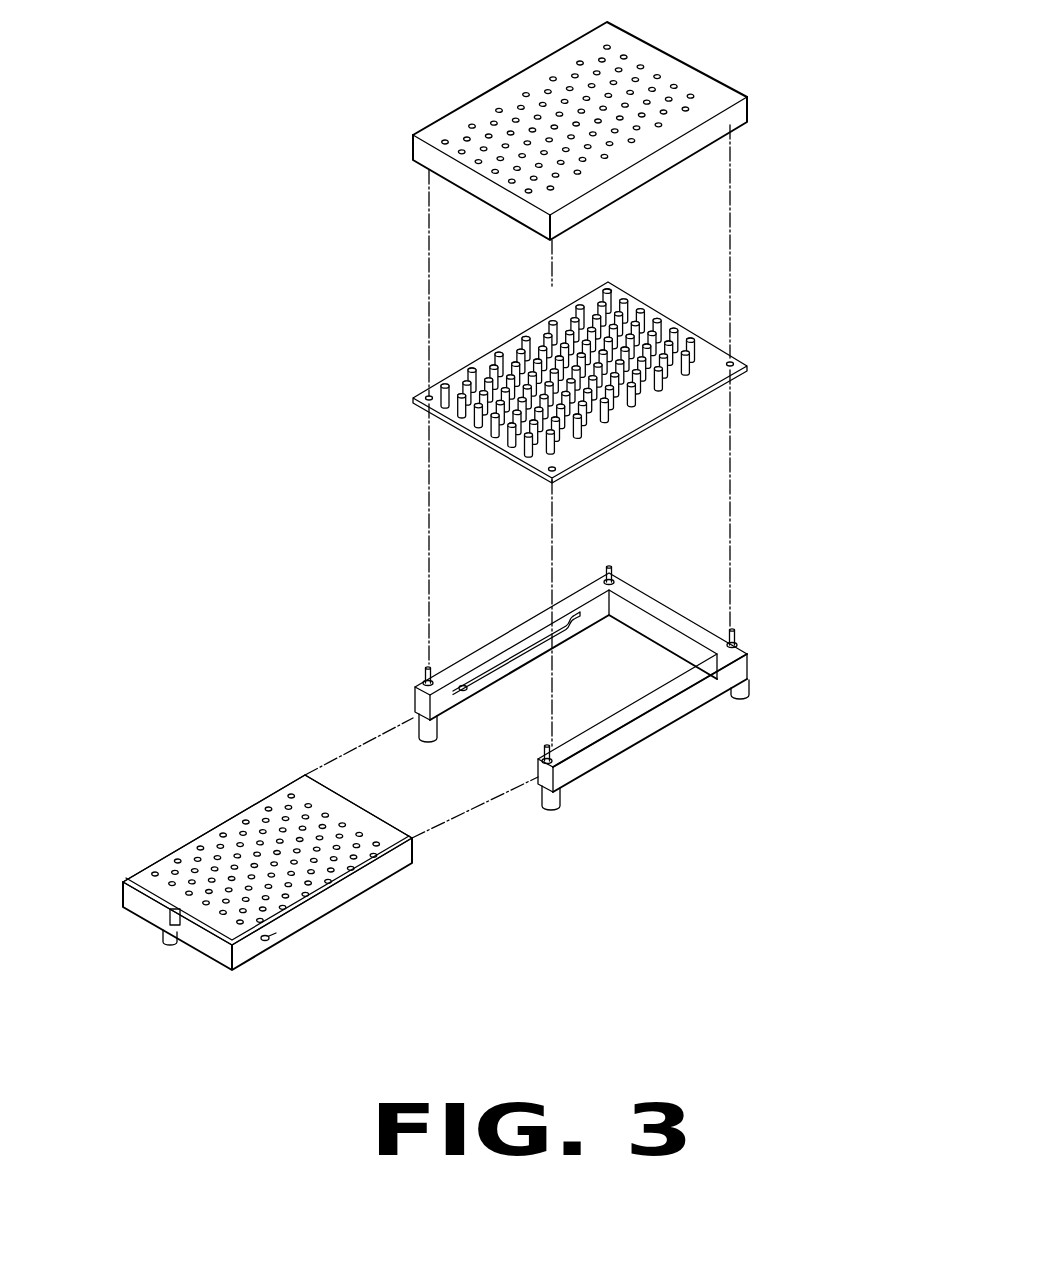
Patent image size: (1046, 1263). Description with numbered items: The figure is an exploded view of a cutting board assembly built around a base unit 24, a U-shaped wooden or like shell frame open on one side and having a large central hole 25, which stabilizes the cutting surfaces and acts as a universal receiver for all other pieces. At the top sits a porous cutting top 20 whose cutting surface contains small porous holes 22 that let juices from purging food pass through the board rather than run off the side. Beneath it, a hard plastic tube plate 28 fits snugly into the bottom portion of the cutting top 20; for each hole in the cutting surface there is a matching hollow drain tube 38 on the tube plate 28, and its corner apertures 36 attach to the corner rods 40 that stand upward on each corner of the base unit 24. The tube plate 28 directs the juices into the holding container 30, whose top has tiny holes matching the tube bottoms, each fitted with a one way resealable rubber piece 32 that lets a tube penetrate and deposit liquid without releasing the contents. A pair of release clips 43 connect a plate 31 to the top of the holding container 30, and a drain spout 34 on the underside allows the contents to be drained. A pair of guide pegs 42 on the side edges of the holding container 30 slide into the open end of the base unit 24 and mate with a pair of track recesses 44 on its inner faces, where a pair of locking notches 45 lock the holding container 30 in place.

The porous cutting top 20 is at (840, 85).
The porous holes 22 is at (547, 83).
The base unit 24 is at (690, 620).
The central hole 25 is at (620, 688).
The tube plate 28 is at (733, 372).
The holding container 30 is at (395, 858).
The plate 31 is at (185, 848).
The one way resealable rubber piece 32 is at (356, 848).
The drain spout 34 is at (170, 940).
The corner apertures 36 is at (733, 364).
The hollow drain tube 38 is at (677, 323).
The corner rods 40 is at (735, 646).
The guide pegs 42 is at (268, 938).
The release clips 43 is at (305, 776).
The track recesses 44 is at (510, 657).
The locking notches 45 is at (578, 613).